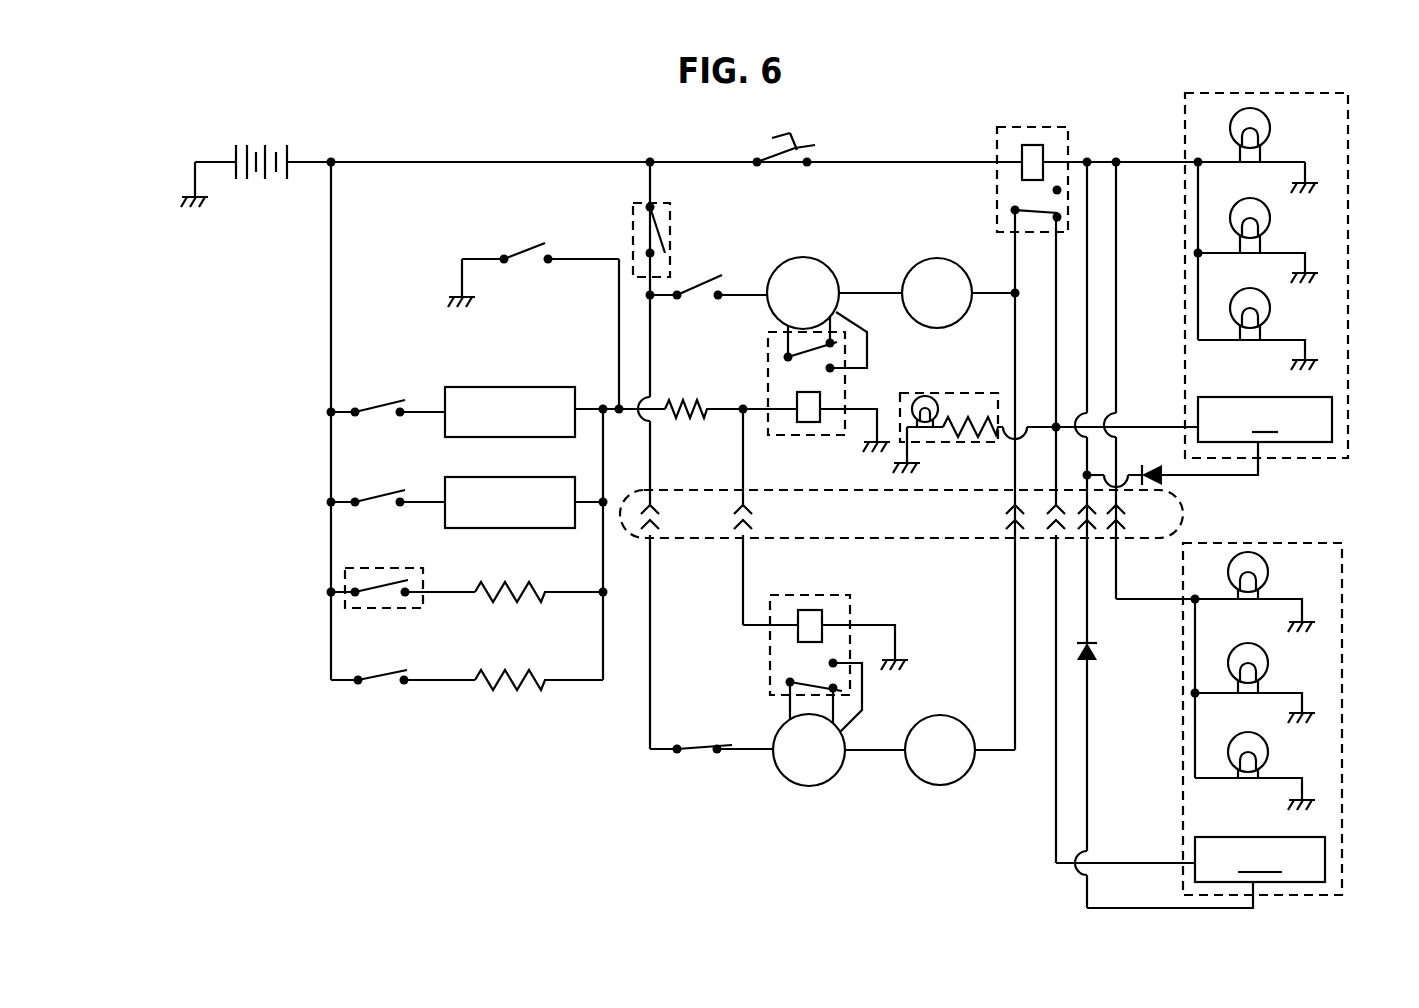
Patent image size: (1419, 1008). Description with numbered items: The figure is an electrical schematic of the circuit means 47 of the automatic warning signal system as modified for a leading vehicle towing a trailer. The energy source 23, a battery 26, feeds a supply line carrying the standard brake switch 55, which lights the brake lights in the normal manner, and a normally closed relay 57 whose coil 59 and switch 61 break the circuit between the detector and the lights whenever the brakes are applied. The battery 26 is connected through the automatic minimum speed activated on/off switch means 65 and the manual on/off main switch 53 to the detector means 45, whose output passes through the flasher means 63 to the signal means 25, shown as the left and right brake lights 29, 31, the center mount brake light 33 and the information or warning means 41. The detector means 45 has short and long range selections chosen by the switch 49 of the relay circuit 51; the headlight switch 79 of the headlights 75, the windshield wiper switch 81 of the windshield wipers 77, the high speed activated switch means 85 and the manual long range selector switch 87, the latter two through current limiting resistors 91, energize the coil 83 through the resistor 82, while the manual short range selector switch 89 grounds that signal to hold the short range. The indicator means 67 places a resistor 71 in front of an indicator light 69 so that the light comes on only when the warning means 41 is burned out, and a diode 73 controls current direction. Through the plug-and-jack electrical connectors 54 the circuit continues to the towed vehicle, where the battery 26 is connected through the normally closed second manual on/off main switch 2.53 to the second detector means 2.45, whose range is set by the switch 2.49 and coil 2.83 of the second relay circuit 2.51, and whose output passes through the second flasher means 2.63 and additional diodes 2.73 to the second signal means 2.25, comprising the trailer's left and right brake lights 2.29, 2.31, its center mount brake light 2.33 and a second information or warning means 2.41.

The energy source 23 is at (249, 127).
The battery 26 is at (293, 160).
The circuit means 47 is at (398, 817).
The brake switch 55 is at (748, 151).
The relay 57 is at (1010, 161).
The coil 59 is at (1022, 160).
The switch 61 is at (1015, 210).
The signal means 25 is at (1246, 267).
The left brake light 29 is at (1233, 130).
The high and/or center mount brake light 33 is at (1233, 218).
The right brake light 31 is at (1233, 306).
The information or warning means 41 is at (1247, 436).
The manual short range selector switch 89 is at (543, 245).
The automatic minimum speed activated on/off switch means 65 is at (668, 253).
The manual on/off main switch 53 is at (700, 290).
The detector means 45 is at (803, 260).
The flasher means 63 is at (937, 261).
The relay circuit 51 is at (809, 397).
The switch 49 is at (788, 357).
The coil 83 is at (797, 403).
The resistor 82 is at (706, 415).
The indicator means 67 is at (1045, 420).
The indicator light 69 is at (925, 396).
The resistor 71 is at (958, 420).
The diode 73 is at (1192, 490).
The headlights 75 is at (556, 388).
The headlight switch 79 is at (379, 405).
The windshield wipers 77 is at (508, 530).
The windshield wiper switch 81 is at (379, 495).
The high speed activated switch means 85 is at (370, 612).
The manual long range selector switch 87 is at (385, 683).
The current limiting resistors 91 is at (520, 598).
The electrical connectors 54 is at (707, 540).
The second relay circuit 2.51 is at (806, 646).
The coil 2.83 is at (800, 635).
The switch 2.49 is at (790, 678).
The second manual on/off main switch 2.53 is at (695, 752).
The second detector means 2.45 is at (805, 780).
The second flasher means 2.63 is at (945, 780).
The additional diode 2.73 is at (1095, 672).
The second signal means 2.25 is at (1223, 709).
The left brake light 2.29 is at (1265, 572).
The high and/or center mount brake light 2.33 is at (1262, 661).
The right brake light 2.31 is at (1262, 748).
The information or warning means 2.41 is at (1190, 872).